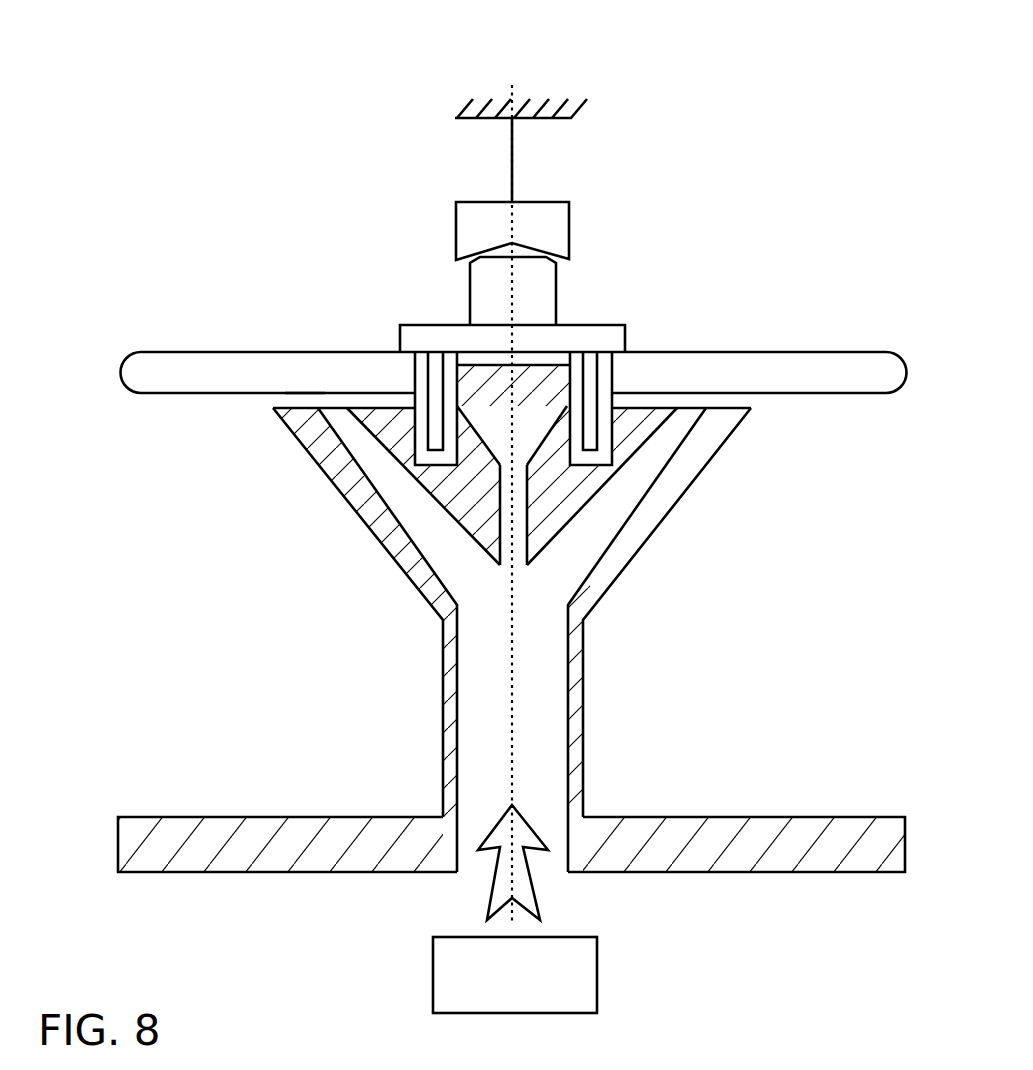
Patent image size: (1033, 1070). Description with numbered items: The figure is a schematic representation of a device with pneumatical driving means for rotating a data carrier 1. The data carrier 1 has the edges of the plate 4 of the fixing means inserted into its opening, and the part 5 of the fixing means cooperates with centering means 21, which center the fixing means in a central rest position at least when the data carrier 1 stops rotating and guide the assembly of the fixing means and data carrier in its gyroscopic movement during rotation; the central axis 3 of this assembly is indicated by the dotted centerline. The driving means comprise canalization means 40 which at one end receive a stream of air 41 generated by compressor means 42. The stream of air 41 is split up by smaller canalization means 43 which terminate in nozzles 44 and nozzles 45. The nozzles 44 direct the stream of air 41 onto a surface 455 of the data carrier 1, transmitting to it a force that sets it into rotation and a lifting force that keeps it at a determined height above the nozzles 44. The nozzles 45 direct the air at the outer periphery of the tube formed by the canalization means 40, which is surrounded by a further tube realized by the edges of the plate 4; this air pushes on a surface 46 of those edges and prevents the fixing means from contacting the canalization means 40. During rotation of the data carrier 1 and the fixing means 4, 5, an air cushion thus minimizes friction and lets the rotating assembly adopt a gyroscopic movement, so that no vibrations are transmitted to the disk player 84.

The data carrier 1 is at (797, 367).
The axis of rotation 3 is at (510, 230).
The plate 4 is at (587, 335).
The part of the fixing means 5 is at (528, 290).
The centering means 21 is at (545, 222).
The canalization means 40 is at (540, 703).
The stream of air 41 is at (500, 890).
The compressor means 42 is at (515, 975).
The smaller canalization means 43 is at (447, 548).
The nozzles 44 is at (335, 418).
The nozzles 45 is at (455, 398).
The surface of the edges of the plate 46 is at (443, 386).
The disk player 84 is at (498, 103).
The surface of the data carrier 455 is at (303, 398).